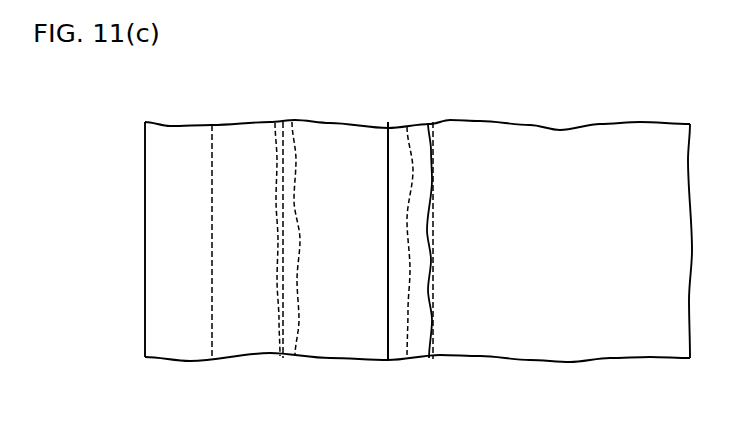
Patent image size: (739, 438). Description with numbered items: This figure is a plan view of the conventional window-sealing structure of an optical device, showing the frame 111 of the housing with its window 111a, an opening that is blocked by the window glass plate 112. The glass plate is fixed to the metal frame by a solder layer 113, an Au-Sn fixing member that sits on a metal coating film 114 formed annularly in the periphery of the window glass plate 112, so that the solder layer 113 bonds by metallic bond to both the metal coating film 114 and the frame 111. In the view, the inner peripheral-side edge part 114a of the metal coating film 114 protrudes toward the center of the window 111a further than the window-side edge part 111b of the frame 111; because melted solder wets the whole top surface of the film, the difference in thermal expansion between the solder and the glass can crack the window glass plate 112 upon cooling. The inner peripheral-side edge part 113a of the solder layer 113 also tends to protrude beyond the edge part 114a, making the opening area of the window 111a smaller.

The frame 111 is at (172, 122).
The window 111a is at (388, 145).
The window-side edge part 111b is at (388, 192).
The window glass plate 112 is at (608, 359).
The solder layer 113 is at (354, 147).
The inner peripheral-side edge part of the solder layer 113a is at (430, 230).
The metal coating film 114 is at (355, 295).
The inner peripheral-side edge part of the metal coating film 114a is at (408, 278).